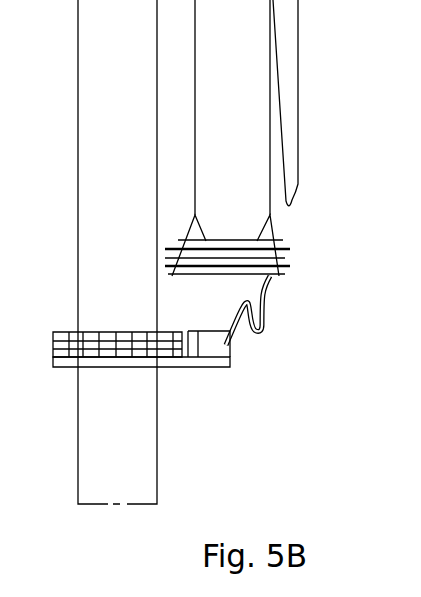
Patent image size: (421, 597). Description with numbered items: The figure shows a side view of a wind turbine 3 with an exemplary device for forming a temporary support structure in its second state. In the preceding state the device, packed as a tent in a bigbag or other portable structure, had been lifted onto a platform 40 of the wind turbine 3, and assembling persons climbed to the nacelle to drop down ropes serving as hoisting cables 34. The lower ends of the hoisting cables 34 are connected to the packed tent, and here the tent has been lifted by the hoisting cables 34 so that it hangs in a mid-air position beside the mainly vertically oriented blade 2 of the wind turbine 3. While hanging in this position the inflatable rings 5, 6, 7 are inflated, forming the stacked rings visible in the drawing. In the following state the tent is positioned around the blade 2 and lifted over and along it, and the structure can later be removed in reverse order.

The blade 2 is at (295, 163).
The wind turbine 3 is at (102, 238).
The hoisting cables 34 is at (195, 145).
The inflatable ring 5 is at (283, 248).
The inflatable ring 6 is at (283, 262).
The inflatable ring 7 is at (283, 273).
The platform 40 is at (205, 360).